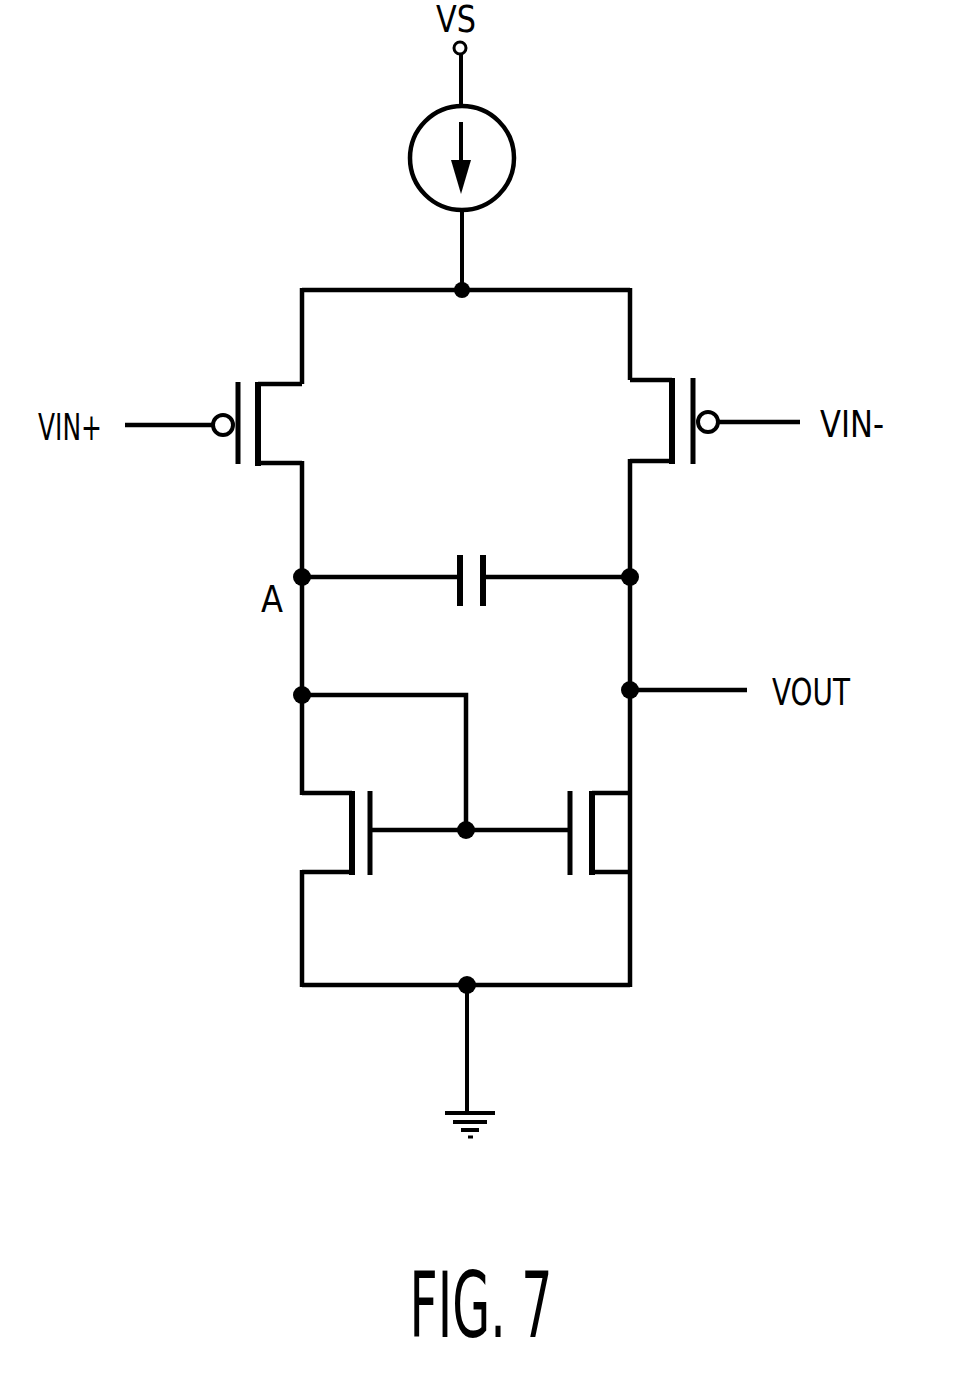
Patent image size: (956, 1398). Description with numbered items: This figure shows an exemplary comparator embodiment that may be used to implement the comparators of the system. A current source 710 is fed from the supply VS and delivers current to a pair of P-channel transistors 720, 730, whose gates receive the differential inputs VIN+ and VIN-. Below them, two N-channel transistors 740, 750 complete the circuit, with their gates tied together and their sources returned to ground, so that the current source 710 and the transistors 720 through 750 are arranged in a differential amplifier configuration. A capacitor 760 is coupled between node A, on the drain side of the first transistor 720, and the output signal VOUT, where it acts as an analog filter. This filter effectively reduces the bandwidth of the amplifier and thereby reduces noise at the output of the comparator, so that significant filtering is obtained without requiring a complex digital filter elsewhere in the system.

The current source 710 is at (410, 157).
The transistor 720 is at (237, 447).
The transistor 730 is at (697, 446).
The transistor 740 is at (372, 855).
The transistor 750 is at (568, 855).
The capacitor 760 is at (490, 558).